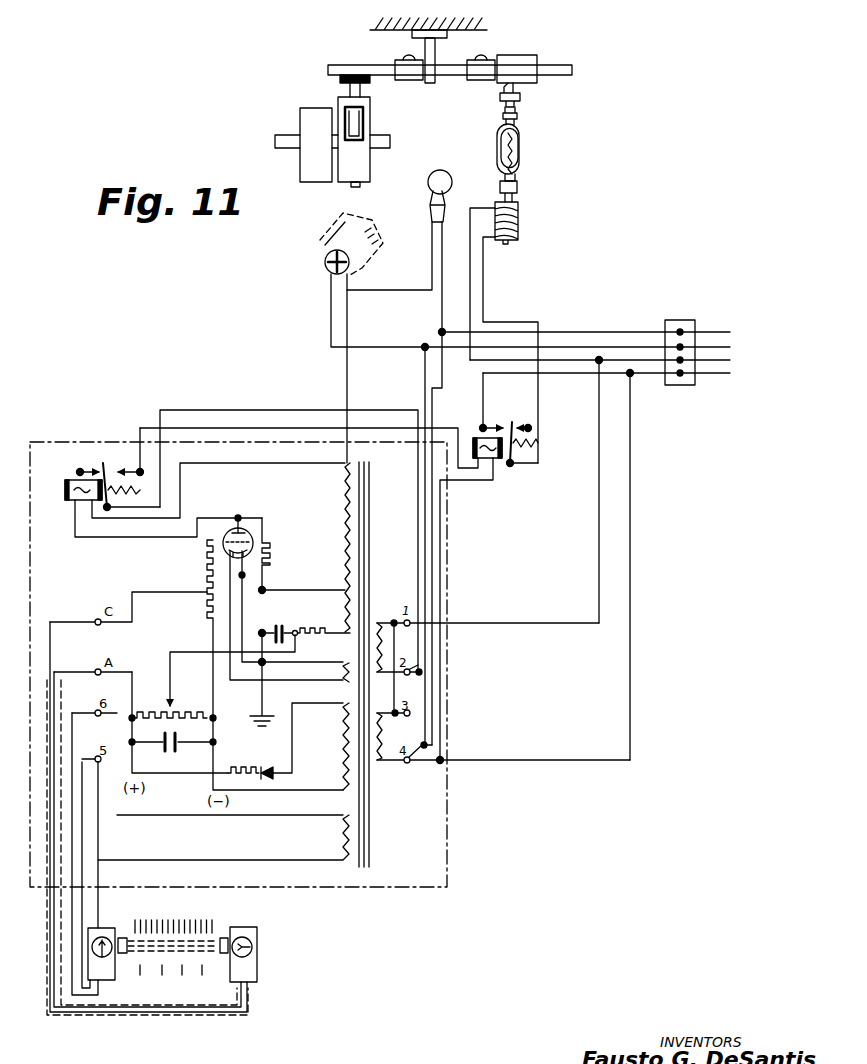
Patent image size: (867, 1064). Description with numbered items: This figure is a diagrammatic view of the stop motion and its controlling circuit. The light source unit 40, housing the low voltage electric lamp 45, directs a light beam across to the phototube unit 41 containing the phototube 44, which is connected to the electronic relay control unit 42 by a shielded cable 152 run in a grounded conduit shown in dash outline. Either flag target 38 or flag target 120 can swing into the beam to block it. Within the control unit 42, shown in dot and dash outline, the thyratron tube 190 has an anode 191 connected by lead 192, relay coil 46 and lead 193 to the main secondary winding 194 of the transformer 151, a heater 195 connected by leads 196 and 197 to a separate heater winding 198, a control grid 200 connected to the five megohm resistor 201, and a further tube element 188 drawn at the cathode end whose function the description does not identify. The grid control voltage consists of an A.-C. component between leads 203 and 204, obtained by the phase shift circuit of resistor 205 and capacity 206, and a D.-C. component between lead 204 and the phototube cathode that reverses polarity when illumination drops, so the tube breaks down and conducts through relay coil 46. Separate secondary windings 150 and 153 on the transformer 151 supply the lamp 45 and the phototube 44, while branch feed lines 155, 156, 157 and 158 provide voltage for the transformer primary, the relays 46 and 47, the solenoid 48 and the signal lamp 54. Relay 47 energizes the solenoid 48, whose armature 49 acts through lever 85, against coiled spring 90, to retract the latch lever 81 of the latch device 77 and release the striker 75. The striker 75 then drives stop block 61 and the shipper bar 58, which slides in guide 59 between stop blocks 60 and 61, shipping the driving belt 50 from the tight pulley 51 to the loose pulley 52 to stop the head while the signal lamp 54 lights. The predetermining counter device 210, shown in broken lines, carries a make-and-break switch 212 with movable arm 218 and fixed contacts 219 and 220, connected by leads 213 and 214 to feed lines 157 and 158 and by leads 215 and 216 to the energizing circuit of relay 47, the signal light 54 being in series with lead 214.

The shipper bar 58 is at (366, 65).
The guide 59 is at (432, 84).
The stop block 60 is at (408, 81).
The stop block 61 is at (473, 81).
The striker 75 is at (522, 58).
The latch lever 81 is at (522, 106).
The latch device 77 is at (496, 131).
The lever 85 is at (521, 149).
The coiled spring 90 is at (521, 161).
The armature 49 is at (519, 186).
The solenoid 48 is at (518, 240).
The signal lamp 54 is at (440, 172).
The tight pulley 51 is at (371, 173).
The loose pulley 52 is at (318, 182).
The driving belt 50 is at (358, 187).
The counter device 210 is at (383, 244).
The movable switch arm 218 is at (325, 255).
The fixed contact 219 is at (321, 268).
The make-and-break switch 212 is at (330, 276).
The fixed contact 220 is at (349, 262).
The lead 213 is at (331, 321).
The lead 214 is at (400, 292).
The lead 215 is at (347, 373).
The lead 216 is at (425, 373).
The branch feed line 158 is at (730, 332).
The branch feed line 157 is at (730, 347).
The branch feed line 156 is at (730, 360).
The branch feed line 155 is at (730, 373).
The relay 47 is at (498, 459).
The relay 46 is at (67, 498).
The electronic relay control unit 42 is at (450, 822).
The lead 193 is at (274, 466).
The lead 192 is at (212, 516).
The anode 191 is at (252, 533).
The thyratron tube 190 is at (266, 537).
The control grid 200 is at (222, 541).
The cathode 188 is at (227, 549).
The heater 195 is at (230, 553).
The resistor 201 is at (207, 580).
The lead 203 is at (300, 586).
The main secondary winding 194 is at (345, 555).
The transformer 151 is at (372, 848).
The capacity 206 is at (276, 629).
The resistor 205 is at (310, 630).
The lead 204 is at (187, 652).
The lead 197 is at (270, 682).
The lead 196 is at (319, 660).
The heater winding 198 is at (335, 676).
The secondary winding 153 is at (343, 740).
The secondary winding 150 is at (343, 841).
The cable 152 is at (181, 1018).
The electric lamp 45 is at (104, 937).
The light source unit 40 is at (113, 975).
The flag target 38 is at (213, 923).
The flag target 120 is at (202, 976).
The phototube 44 is at (255, 933).
The phototube unit 41 is at (257, 976).